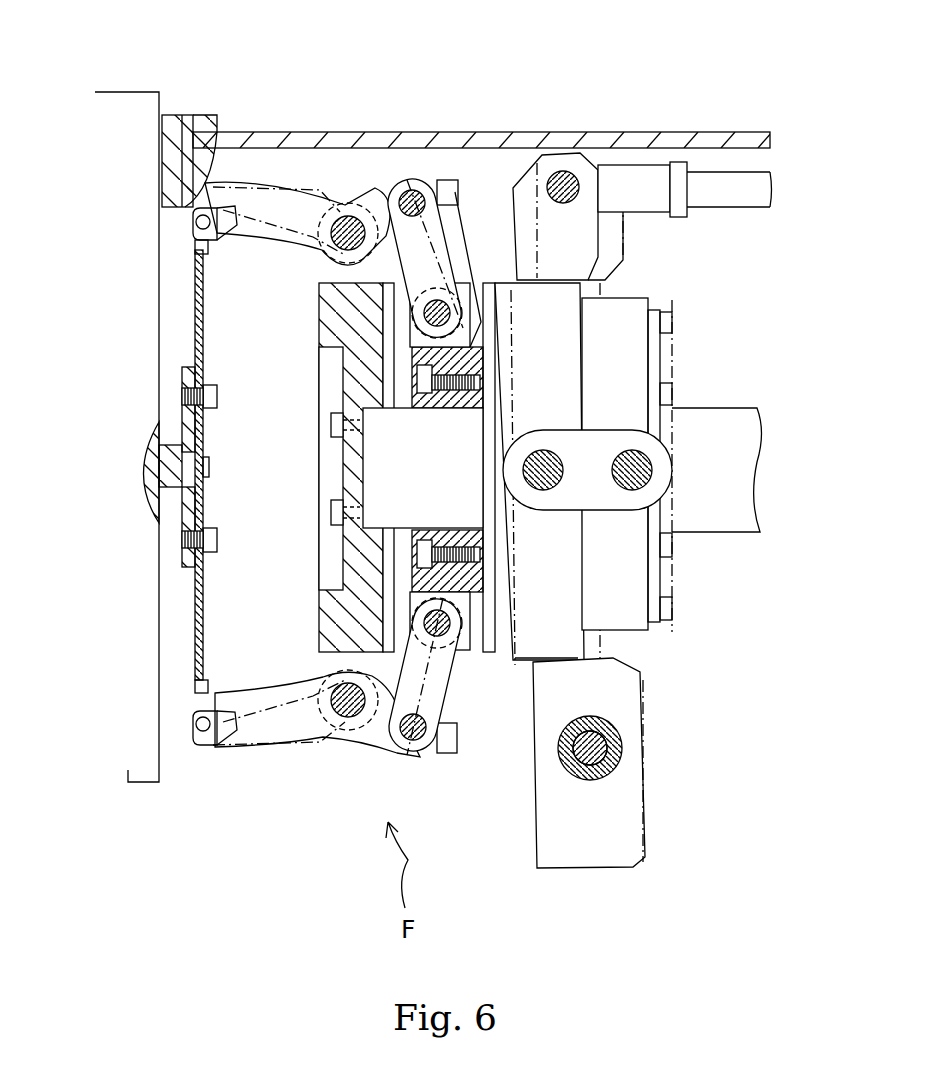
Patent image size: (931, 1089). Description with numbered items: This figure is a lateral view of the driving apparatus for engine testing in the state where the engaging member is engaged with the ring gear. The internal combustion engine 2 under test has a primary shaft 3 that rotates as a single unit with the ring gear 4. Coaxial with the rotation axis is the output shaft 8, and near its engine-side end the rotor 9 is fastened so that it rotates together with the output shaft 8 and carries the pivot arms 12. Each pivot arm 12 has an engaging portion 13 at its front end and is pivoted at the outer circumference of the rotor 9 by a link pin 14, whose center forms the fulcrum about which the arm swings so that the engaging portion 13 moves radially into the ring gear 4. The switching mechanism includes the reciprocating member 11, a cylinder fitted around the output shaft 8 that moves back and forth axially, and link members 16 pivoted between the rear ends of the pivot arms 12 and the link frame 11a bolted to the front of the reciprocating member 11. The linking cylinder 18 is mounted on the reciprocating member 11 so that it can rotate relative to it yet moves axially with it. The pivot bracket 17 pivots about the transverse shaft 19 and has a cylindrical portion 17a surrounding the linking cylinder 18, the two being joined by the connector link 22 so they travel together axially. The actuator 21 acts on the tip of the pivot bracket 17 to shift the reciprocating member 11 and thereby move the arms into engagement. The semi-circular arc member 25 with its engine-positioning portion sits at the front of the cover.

The internal combustion engine 2 is at (88, 700).
The primary shaft 3 is at (145, 443).
The ring gear 4 is at (194, 332).
The output shaft 8 is at (727, 427).
The rotor 9 is at (353, 387).
The reciprocating member 11 is at (478, 365).
The link frame 11a is at (400, 590).
The pivot arm 12 is at (275, 190).
The engaging portion 13 is at (222, 708).
The link pin 14 is at (350, 215).
The link member 16 is at (440, 683).
The pivot bracket 17 is at (523, 200).
The cylindrical portion 17a is at (577, 643).
The linking cylinder 18 is at (623, 305).
The transverse shaft 19 is at (590, 748).
The actuator 21 is at (738, 185).
The connector link 22 is at (620, 500).
The semi-circular arc member 25 is at (213, 131).